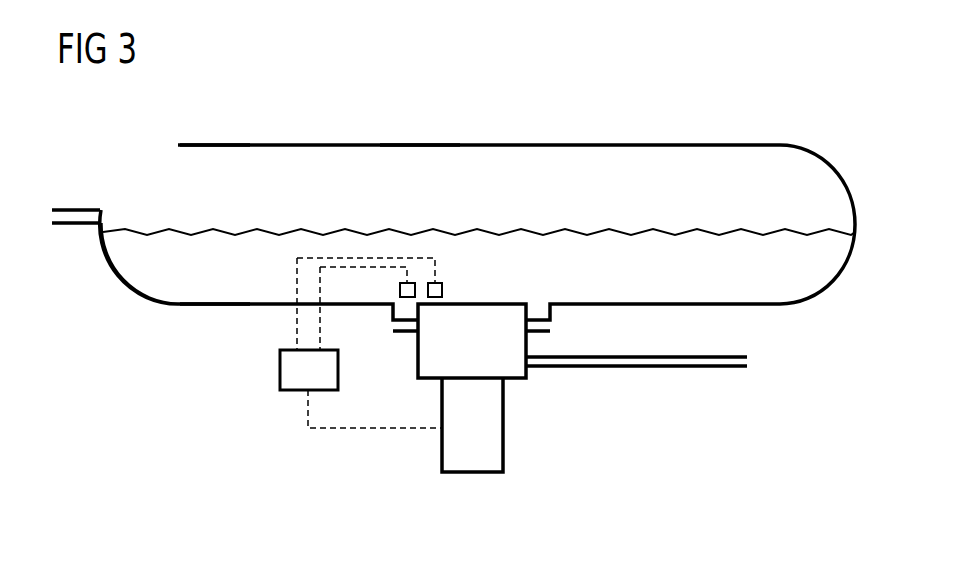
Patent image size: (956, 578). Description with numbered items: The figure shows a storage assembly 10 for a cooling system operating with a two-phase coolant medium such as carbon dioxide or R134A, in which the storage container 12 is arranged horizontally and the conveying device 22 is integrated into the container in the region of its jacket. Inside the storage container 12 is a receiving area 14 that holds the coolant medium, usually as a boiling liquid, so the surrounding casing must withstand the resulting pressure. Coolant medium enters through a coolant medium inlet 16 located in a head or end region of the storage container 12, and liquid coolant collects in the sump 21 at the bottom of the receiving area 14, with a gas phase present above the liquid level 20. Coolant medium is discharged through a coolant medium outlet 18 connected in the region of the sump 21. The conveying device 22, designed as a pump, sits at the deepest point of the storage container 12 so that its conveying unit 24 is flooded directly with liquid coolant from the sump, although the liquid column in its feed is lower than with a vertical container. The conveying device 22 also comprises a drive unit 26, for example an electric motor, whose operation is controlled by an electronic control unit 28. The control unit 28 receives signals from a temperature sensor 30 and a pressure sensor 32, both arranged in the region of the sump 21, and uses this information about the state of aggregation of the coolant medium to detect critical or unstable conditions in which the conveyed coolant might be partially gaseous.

The storage assembly 10 is at (748, 127).
The storage container 12 is at (414, 142).
The receiving area 14 is at (201, 157).
The coolant medium inlet 16 is at (77, 215).
The coolant medium outlet 18 is at (693, 362).
The liquid level 20 is at (640, 233).
The sump 21 is at (192, 281).
The conveying device 22 is at (490, 387).
The conveying unit 24 is at (485, 312).
The drive unit 26 is at (471, 460).
The electronic control unit 28 is at (280, 372).
The temperature sensor 30 is at (398, 292).
The pressure sensor 32 is at (440, 282).